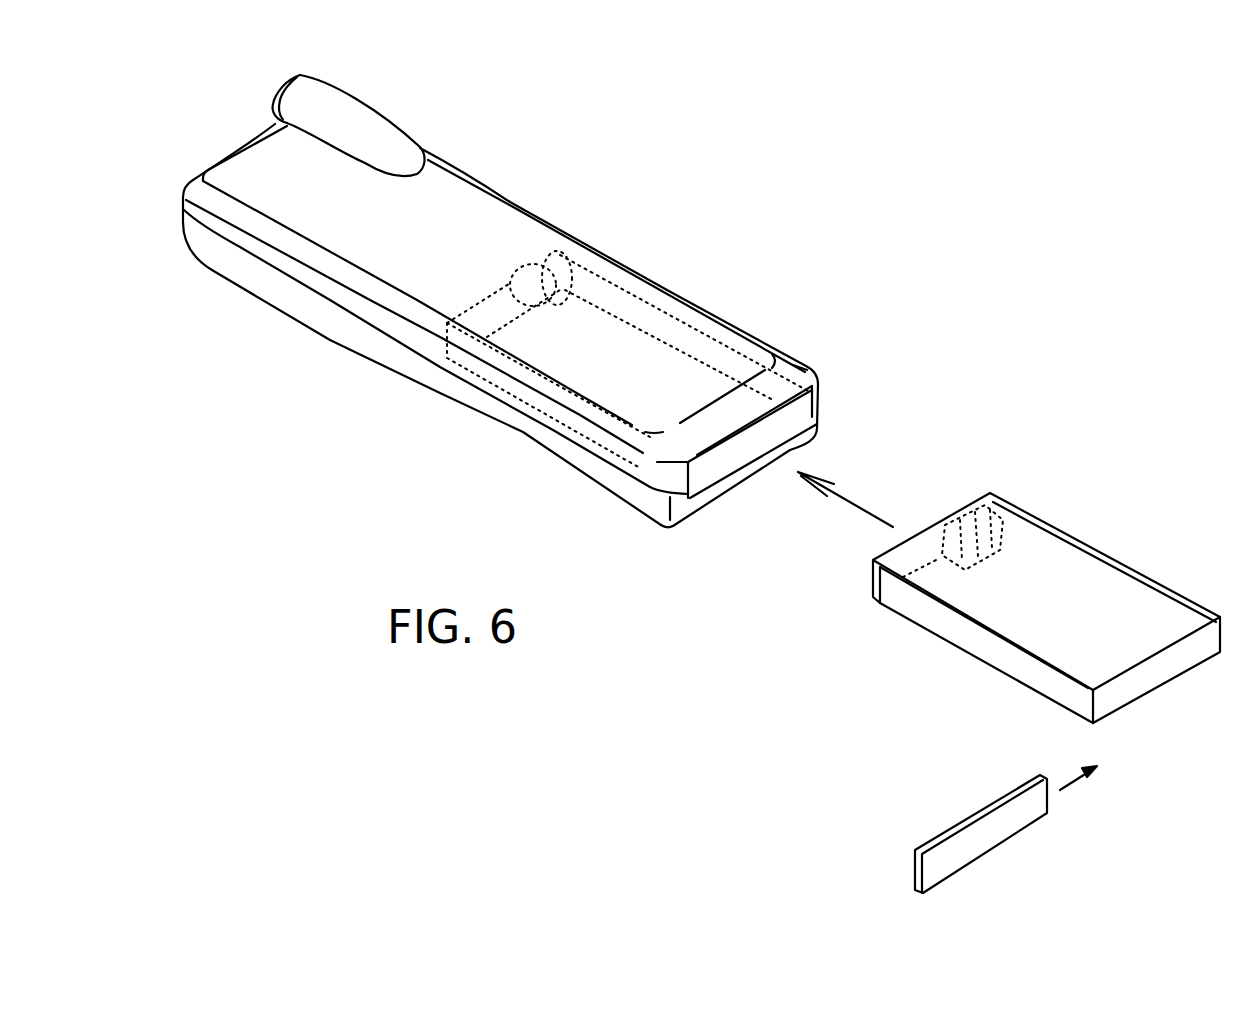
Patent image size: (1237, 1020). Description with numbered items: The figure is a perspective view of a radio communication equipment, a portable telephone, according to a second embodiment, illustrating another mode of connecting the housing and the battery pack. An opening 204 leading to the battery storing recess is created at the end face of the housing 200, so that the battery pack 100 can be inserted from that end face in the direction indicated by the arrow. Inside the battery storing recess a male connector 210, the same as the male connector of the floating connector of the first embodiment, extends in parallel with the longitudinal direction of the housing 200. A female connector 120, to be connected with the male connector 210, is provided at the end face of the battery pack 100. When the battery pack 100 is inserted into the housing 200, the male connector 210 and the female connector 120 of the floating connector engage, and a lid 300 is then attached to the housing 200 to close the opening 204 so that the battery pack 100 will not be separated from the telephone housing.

The housing 200 is at (540, 194).
The male connector 210 is at (564, 291).
The opening 204 is at (820, 425).
The battery pack 100 is at (1113, 567).
The female connector 120 is at (990, 520).
The lid 300 is at (1020, 822).